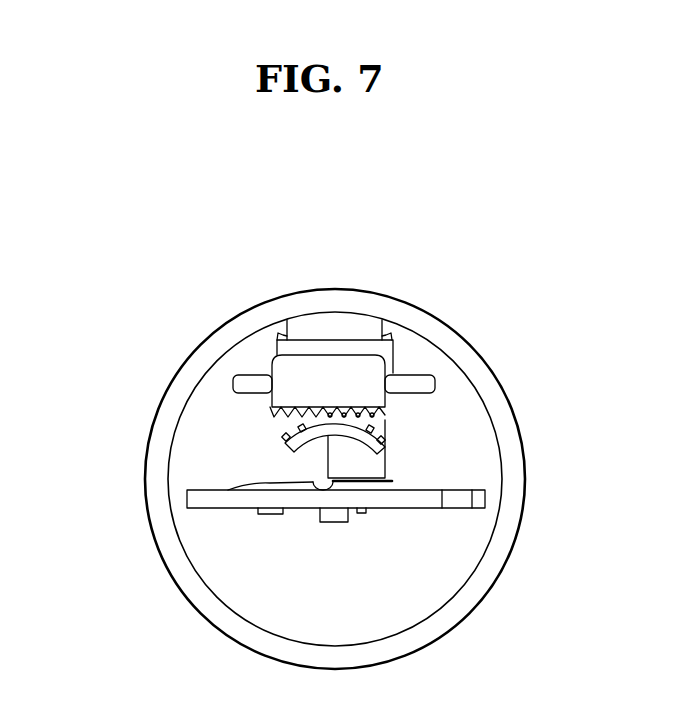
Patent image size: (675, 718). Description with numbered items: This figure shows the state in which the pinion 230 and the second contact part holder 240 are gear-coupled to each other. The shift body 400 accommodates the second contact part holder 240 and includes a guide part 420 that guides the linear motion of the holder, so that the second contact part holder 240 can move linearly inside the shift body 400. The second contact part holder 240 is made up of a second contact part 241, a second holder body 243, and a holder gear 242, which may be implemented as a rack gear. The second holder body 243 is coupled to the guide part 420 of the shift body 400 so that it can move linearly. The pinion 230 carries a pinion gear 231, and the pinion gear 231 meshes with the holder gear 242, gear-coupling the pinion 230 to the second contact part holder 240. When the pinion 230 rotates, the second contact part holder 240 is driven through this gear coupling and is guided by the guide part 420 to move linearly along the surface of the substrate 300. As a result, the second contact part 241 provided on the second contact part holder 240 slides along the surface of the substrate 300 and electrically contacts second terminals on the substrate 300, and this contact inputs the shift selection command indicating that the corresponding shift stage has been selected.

The shift body 400 is at (337, 288).
The guide part 420 is at (393, 357).
The second contact part holder 240 is at (293, 399).
The second holder body 243 is at (270, 363).
The holder gear 242 is at (275, 414).
The pinion gear 231 is at (284, 440).
The pinion 230 is at (292, 451).
The second contact part 241 is at (266, 483).
The substrate 300 is at (485, 498).